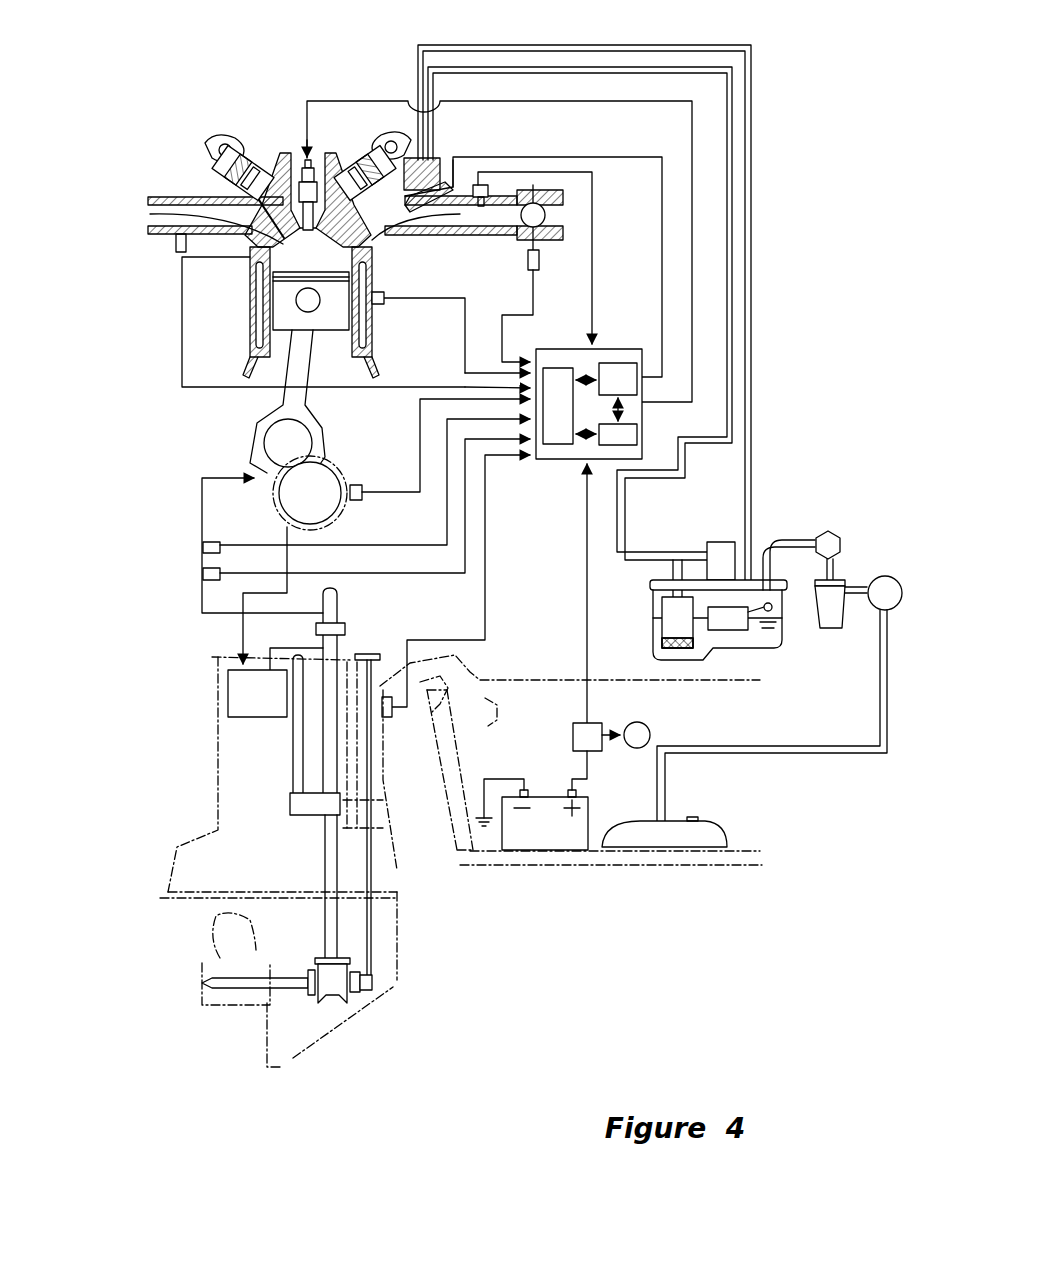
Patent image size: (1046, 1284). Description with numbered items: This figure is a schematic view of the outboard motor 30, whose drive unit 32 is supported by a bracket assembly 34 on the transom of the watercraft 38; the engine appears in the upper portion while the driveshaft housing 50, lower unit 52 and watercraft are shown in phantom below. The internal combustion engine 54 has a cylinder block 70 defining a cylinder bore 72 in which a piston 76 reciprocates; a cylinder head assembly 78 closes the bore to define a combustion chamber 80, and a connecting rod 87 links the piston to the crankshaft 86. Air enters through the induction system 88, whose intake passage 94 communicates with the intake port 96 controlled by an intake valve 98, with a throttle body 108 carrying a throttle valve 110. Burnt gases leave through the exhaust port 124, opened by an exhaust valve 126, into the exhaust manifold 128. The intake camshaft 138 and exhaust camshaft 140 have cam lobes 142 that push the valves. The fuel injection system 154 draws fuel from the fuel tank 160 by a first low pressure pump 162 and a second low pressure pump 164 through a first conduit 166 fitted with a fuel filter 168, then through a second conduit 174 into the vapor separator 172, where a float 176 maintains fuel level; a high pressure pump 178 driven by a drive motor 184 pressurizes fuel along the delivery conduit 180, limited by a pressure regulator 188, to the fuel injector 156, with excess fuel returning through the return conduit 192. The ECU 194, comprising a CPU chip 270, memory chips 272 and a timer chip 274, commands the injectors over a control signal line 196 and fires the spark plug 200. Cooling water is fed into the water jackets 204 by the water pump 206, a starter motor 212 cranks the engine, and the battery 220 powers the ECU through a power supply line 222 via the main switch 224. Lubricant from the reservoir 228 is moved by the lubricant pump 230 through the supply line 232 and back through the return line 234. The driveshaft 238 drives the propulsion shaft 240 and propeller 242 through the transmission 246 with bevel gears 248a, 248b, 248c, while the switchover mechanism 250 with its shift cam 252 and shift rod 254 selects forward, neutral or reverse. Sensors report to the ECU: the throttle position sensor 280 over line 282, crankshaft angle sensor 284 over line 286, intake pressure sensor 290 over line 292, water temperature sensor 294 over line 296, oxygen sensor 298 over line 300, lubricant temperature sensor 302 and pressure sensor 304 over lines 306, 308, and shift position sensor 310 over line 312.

The outboard motor 30 is at (778, 76).
The drive unit 32 is at (200, 727).
The bracket assembly 34 is at (421, 794).
The watercraft 38 is at (540, 678).
The driveshaft housing 50 is at (215, 792).
The lower unit 52 is at (400, 958).
The internal combustion engine 54 is at (130, 132).
The cylinder block 70 is at (250, 315).
The cylinder bore 72 is at (268, 258).
The piston 76 is at (272, 296).
The cylinder head assembly 78 is at (283, 152).
The combustion chamber 80 is at (372, 270).
The crankshaft 86 is at (322, 487).
The connecting rod 87 is at (262, 392).
The air induction system 88 is at (600, 150).
The air intake passage 94 is at (440, 236).
The intake port 96 is at (385, 236).
The intake valve 98 is at (318, 188).
The throttle body 108 is at (536, 200).
The throttle valve 110 is at (545, 225).
The exhaust port 124 is at (262, 212).
The exhaust valve 126 is at (200, 212).
The exhaust manifold 128 is at (150, 215).
The intake camshaft 138 is at (385, 138).
The exhaust camshaft 140 is at (226, 142).
The cam lobe 142 is at (208, 142).
The fuel injection system 154 is at (772, 452).
The fuel injector 156 is at (455, 180).
The fuel supply tank 160 is at (715, 832).
The first low pressure fuel pump 162 is at (882, 576).
The second low pressure pump 164 is at (835, 540).
The first fuel supply conduit 166 is at (878, 716).
The fuel filter 168 is at (836, 630).
The vapor separator 172 is at (762, 655).
The second fuel supply conduit 174 is at (775, 548).
The float 176 is at (728, 632).
The high pressure fuel pump 178 is at (672, 622).
The delivery conduit 180 is at (752, 224).
The fuel pump drive motor 184 is at (662, 642).
The pressure regulator 188 is at (720, 542).
The fuel return conduit 192 is at (735, 334).
The ECU 194 is at (556, 349).
The control signal line 196 is at (660, 262).
The spark plug 200 is at (493, 225).
The water jacket 204 is at (258, 344).
The water pump 206 is at (292, 803).
The starter motor 212 is at (648, 725).
The battery 220 is at (590, 818).
The power supply line 222 is at (585, 528).
The main switch 224 is at (573, 738).
The lubricant reservoir 228 is at (228, 690).
The lubricant pump 230 is at (347, 628).
The lubricant supply line 232 is at (200, 483).
The lubricant return line 234 is at (243, 642).
The driveshaft 238 is at (322, 838).
The propulsion shaft 240 is at (290, 986).
The propeller 242 is at (215, 1012).
The transmission 246 is at (335, 1008).
The bevel gear 248a is at (330, 962).
The bevel gear 248b is at (293, 1058).
The bevel gear 248c is at (352, 1000).
The switchover mechanism 250 is at (384, 918).
The shift cam 252 is at (375, 984).
The shift rod 254 is at (372, 758).
The CPU chip 270 is at (557, 446).
The memory chips 272 is at (628, 362).
The timer chip 274 is at (640, 436).
The throttle valve position sensor 280 is at (527, 258).
The sensor signal line 282 is at (502, 314).
The crankshaft angle position sensor 284 is at (358, 483).
The sensor signal line 286 is at (408, 500).
The air intake pressure sensor 290 is at (483, 184).
The sensor signal line 292 is at (594, 206).
The water temperature sensor 294 is at (386, 302).
The sensor signal line 296 is at (462, 362).
The oxygen sensor 298 is at (176, 250).
The sensor signal line 300 is at (182, 340).
The lubricant temperature sensor 302 is at (203, 547).
The lubricant pressure sensor 304 is at (203, 575).
The sensor signal line 306 is at (285, 540).
The sensor signal line 308 is at (382, 547).
The shift position sensor 310 is at (395, 712).
The sensor signal line 312 is at (487, 595).